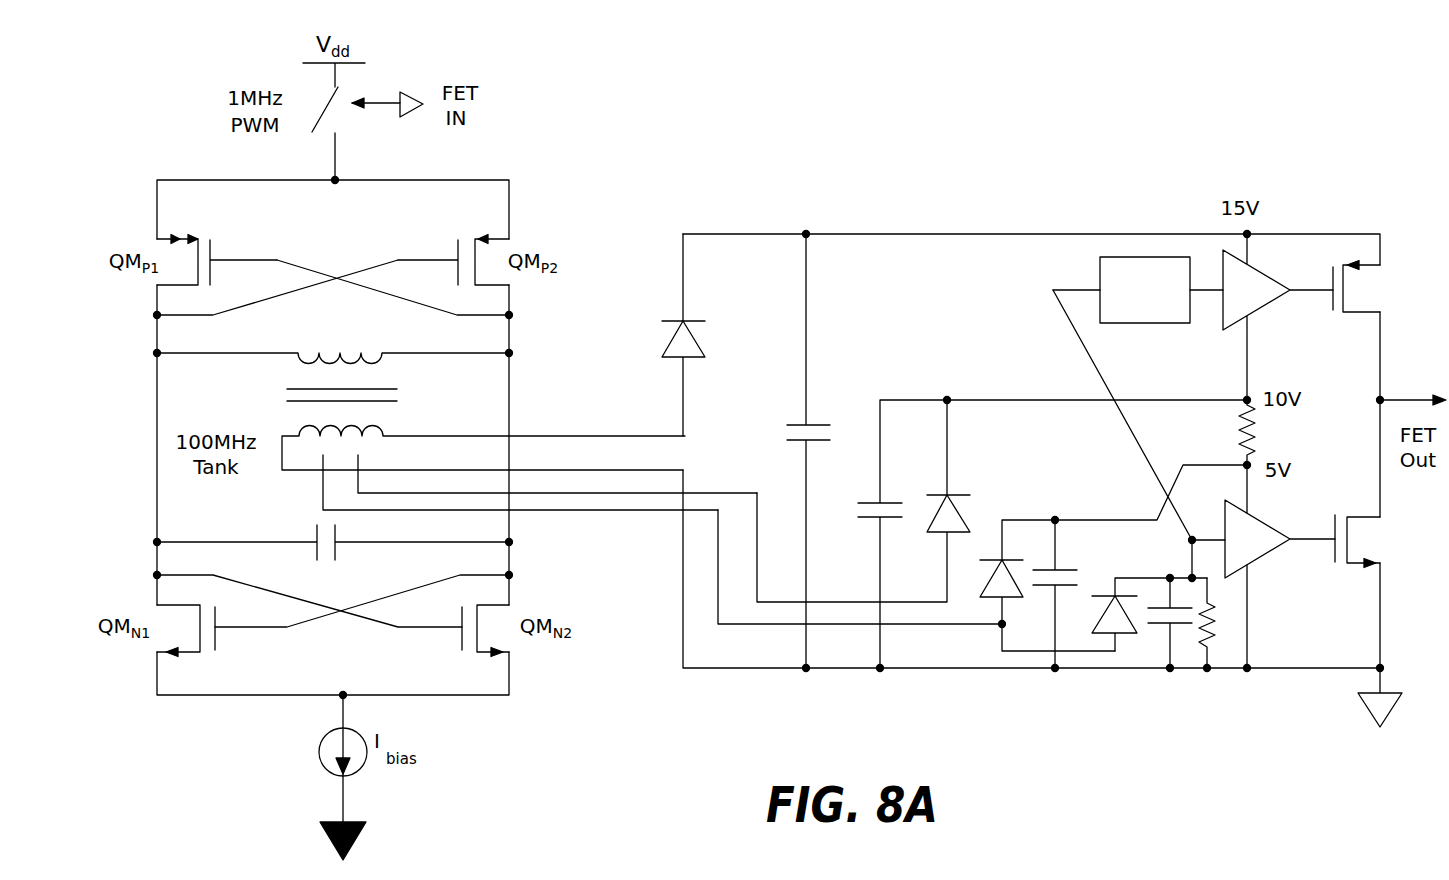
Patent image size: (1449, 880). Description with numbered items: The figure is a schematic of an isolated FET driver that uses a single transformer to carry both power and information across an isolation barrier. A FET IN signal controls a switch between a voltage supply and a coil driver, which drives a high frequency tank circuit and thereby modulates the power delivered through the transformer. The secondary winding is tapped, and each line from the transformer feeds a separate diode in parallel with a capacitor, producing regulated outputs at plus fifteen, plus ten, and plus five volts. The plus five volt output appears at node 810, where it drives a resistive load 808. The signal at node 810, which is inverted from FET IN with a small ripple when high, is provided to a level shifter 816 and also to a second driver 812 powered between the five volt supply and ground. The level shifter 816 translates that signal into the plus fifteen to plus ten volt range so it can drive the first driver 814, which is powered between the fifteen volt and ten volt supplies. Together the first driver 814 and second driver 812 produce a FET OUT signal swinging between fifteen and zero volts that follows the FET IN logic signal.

The resistive load 808 is at (1210, 650).
The node 810 is at (1190, 540).
The second driver 812 is at (1275, 555).
The first driver 814 is at (1273, 303).
The level shifter 816 is at (1165, 323).